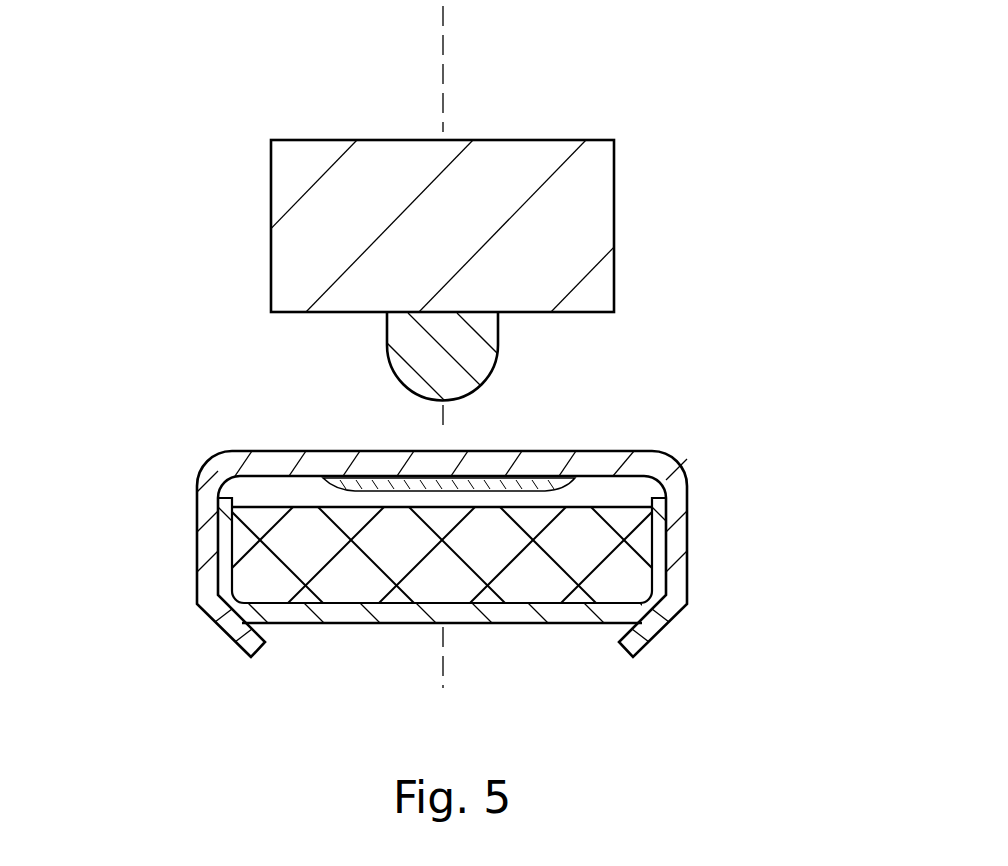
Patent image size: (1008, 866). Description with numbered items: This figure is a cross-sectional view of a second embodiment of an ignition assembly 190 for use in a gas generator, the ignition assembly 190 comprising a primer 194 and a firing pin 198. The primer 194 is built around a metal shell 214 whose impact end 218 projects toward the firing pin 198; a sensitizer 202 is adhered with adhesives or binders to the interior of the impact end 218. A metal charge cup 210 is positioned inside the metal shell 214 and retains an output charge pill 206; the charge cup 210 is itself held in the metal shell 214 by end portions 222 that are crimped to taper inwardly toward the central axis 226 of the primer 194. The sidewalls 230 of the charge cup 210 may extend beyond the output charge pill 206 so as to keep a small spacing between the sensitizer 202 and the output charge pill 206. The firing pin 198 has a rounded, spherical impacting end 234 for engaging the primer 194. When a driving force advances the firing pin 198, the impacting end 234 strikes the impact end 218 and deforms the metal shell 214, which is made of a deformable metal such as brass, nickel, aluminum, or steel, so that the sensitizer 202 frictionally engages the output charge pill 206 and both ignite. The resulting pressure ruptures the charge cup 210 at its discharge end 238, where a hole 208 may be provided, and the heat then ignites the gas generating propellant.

The ignition assembly 190 is at (735, 278).
The primer 194 is at (687, 470).
The firing pin 198 is at (615, 162).
The sensitizer 202 is at (562, 478).
The output charge pill 206 is at (405, 540).
The hole 208 is at (377, 613).
The charge cup 210 is at (652, 542).
The metal shell 214 is at (221, 452).
The impact end 218 is at (340, 451).
The end portions 222 is at (228, 647).
The central axis 226 is at (443, 40).
The sidewalls 230 is at (229, 492).
The impacting end 234 is at (475, 393).
The discharge end 238 is at (550, 624).